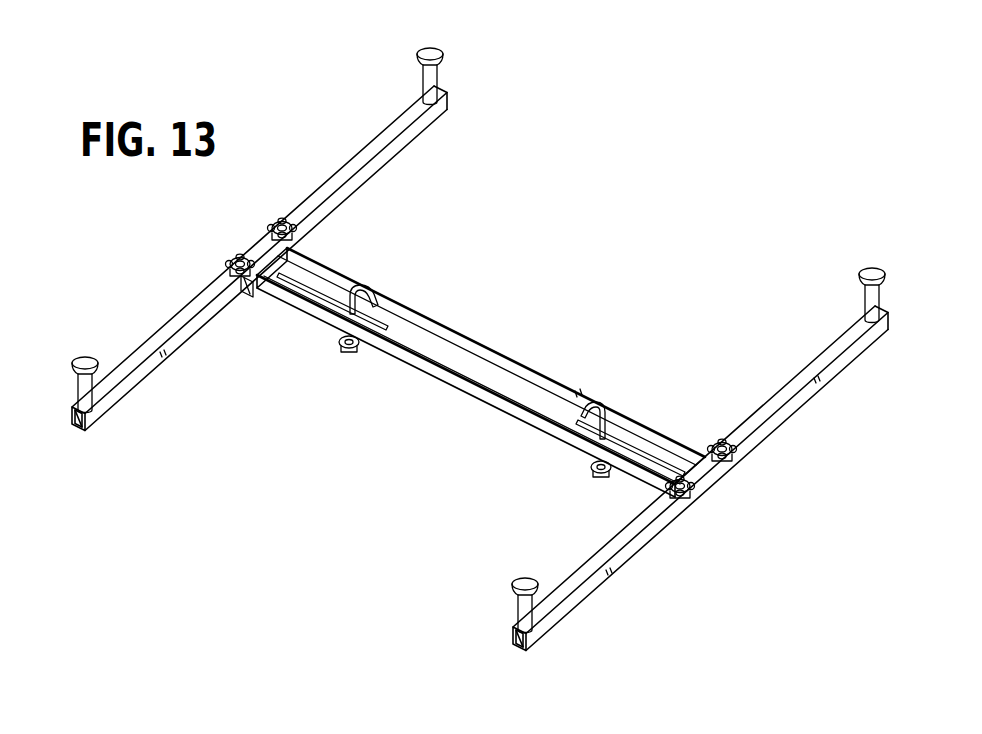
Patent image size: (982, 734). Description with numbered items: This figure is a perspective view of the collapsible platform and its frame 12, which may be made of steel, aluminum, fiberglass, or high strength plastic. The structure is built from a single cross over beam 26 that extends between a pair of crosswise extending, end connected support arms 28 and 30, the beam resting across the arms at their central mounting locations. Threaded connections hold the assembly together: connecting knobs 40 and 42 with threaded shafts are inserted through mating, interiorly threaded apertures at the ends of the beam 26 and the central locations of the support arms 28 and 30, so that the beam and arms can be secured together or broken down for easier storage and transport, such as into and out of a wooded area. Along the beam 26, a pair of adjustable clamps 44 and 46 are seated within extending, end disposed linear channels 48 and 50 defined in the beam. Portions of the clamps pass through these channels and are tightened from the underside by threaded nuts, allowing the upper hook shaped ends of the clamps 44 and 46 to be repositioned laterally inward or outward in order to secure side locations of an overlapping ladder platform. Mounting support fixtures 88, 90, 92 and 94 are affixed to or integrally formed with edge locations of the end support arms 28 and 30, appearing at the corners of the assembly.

The frame 12 is at (552, 222).
The cross over beam 26 is at (500, 350).
The support arm 28 is at (173, 330).
The support arm 30 is at (617, 562).
The connecting knob 40 is at (277, 221).
The connecting knob 42 is at (693, 481).
The adjustable clamp 44 is at (370, 284).
The adjustable clamp 46 is at (600, 404).
The channel 48 is at (320, 288).
The channel 50 is at (643, 446).
The mounting support fixture 88 is at (77, 390).
The mounting support fixture 90 is at (423, 88).
The mounting support fixture 92 is at (512, 613).
The mounting support fixture 94 is at (863, 304).